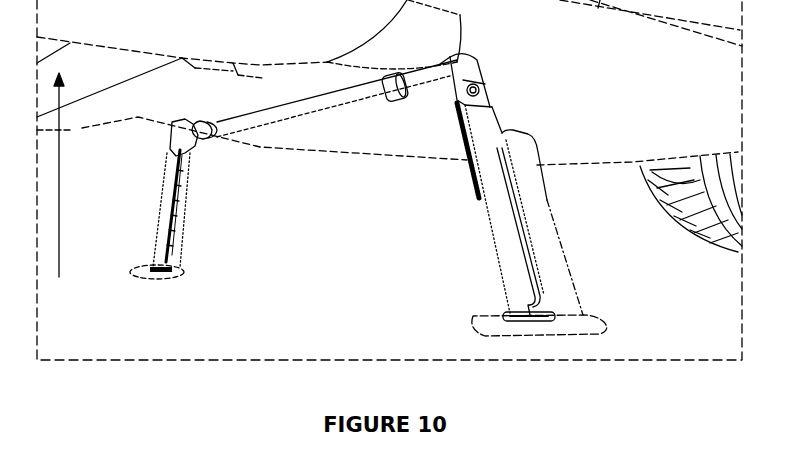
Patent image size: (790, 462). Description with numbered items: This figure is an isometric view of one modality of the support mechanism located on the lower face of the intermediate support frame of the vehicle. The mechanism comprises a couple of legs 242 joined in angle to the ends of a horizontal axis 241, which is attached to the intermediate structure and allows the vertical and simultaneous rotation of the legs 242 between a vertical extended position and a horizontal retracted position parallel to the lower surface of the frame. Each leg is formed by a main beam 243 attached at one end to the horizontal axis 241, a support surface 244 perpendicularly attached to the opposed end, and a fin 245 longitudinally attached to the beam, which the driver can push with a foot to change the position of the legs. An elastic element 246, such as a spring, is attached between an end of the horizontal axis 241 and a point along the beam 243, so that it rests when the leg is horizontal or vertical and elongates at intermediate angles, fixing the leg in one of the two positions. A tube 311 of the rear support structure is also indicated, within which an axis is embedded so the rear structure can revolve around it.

The horizontal axis 241 is at (217, 128).
The legs 242 is at (510, 278).
The main beam 243 is at (509, 233).
The support surface 244 is at (573, 328).
The fin 245 is at (545, 231).
The elastic element 246 is at (455, 125).
The tube 311 is at (66, 192).